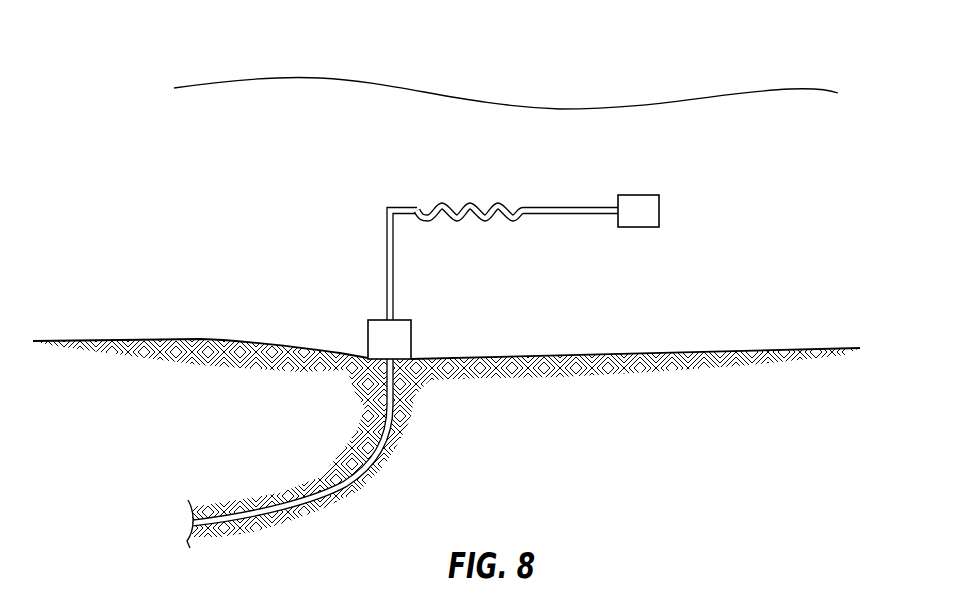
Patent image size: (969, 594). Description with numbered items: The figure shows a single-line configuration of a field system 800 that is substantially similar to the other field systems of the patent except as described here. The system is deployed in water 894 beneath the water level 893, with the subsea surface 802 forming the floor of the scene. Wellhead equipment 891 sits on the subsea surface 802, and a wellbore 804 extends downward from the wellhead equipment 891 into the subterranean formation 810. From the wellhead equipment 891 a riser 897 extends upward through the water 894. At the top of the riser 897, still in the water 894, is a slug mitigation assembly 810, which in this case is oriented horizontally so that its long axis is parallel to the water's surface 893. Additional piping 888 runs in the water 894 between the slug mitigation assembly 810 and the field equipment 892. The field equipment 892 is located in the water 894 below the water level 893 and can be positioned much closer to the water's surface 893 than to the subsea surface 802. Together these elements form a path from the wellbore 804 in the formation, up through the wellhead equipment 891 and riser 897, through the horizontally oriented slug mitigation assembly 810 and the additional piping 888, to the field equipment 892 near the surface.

The field system 800 is at (143, 50).
The water level 893 is at (392, 83).
The water 894 is at (778, 146).
The subsea surface 802 is at (560, 357).
The slug mitigation assembly 810 is at (440, 180).
The wellbore 804 is at (338, 478).
The riser 897 is at (393, 255).
The additional piping 888 is at (571, 207).
The field equipment 892 is at (655, 250).
The wellhead equipment 891 is at (355, 302).